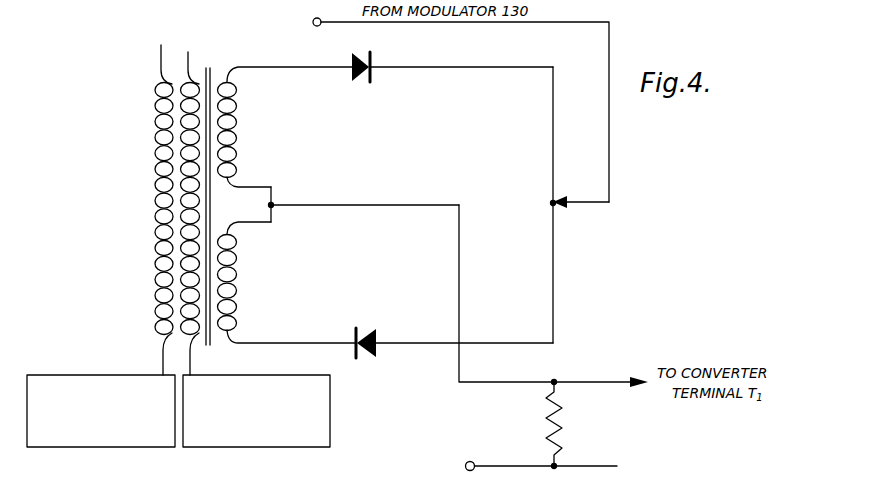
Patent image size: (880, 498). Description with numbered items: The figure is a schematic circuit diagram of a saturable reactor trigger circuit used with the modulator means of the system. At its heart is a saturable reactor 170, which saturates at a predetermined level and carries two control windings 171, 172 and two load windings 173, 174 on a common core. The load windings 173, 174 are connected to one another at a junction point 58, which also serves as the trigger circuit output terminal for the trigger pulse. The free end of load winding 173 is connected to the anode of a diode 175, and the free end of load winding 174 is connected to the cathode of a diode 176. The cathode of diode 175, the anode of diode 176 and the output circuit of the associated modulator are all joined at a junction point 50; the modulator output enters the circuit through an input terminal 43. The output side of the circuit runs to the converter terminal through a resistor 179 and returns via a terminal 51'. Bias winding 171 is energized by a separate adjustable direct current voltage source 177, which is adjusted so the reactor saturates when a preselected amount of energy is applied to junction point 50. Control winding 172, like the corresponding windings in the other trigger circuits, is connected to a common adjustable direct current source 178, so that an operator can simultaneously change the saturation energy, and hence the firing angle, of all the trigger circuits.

The input terminal from modulator 43 is at (313, 22).
The junction point 50 is at (553, 203).
The terminal 51' is at (531, 451).
The junction point 58 is at (272, 204).
The saturable reactor 170 is at (216, 70).
The bias winding 171 is at (198, 64).
The control winding 172 is at (151, 99).
The load winding 173 is at (238, 108).
The load winding 174 is at (237, 274).
The diode 175 is at (375, 42).
The diode 176 is at (362, 328).
The adjustable direct current voltage source 177 is at (235, 447).
The common adjustable direct current source 178 is at (82, 447).
The resistor 179 is at (564, 421).